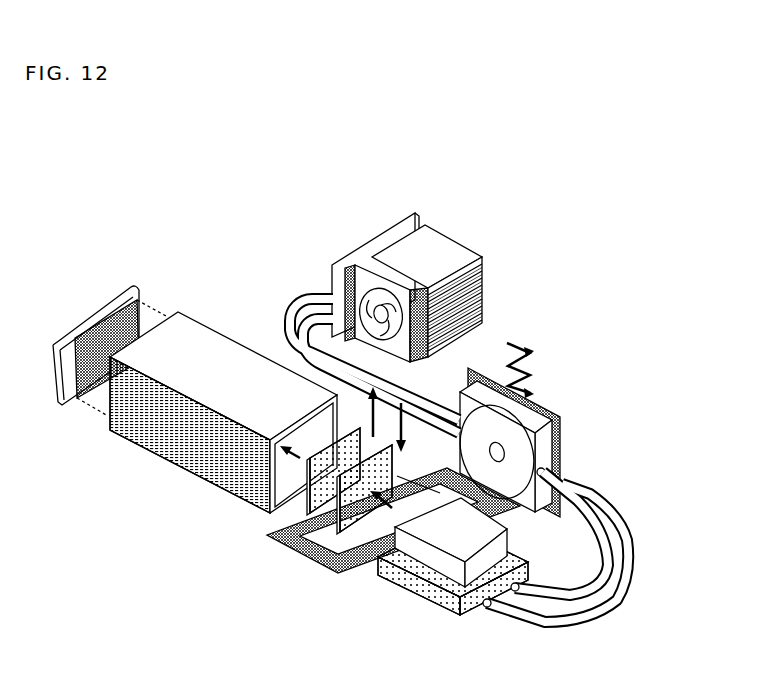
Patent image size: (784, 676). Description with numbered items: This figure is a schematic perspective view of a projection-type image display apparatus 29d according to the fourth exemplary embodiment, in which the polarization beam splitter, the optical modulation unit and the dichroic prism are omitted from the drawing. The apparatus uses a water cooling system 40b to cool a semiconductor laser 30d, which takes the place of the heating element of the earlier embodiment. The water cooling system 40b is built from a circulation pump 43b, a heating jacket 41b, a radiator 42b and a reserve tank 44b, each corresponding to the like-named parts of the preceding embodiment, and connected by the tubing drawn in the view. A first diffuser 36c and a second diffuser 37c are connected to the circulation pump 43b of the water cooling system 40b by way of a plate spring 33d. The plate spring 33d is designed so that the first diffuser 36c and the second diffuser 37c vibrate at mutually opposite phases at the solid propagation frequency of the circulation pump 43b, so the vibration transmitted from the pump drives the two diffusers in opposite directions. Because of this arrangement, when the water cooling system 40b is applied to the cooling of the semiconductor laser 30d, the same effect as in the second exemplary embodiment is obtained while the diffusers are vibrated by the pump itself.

The projection-type image display apparatus 29d is at (108, 218).
The water cooling system 40b is at (645, 279).
The reserve tank 44b is at (407, 233).
The radiator 42b is at (444, 250).
The circulation pump 43b is at (530, 414).
The second diffuser 37c is at (300, 515).
The first diffuser 36c is at (303, 543).
The plate spring 33d is at (337, 572).
The semiconductor laser 30d is at (432, 556).
The heating jacket 41b is at (430, 604).